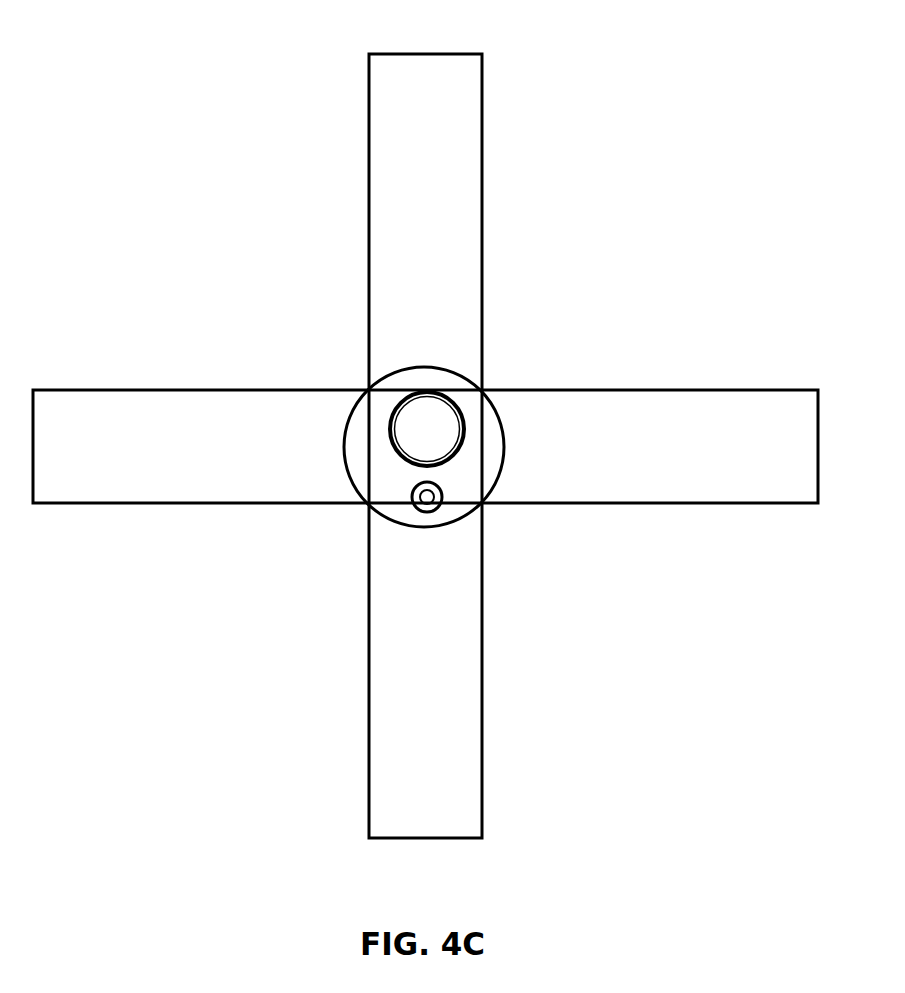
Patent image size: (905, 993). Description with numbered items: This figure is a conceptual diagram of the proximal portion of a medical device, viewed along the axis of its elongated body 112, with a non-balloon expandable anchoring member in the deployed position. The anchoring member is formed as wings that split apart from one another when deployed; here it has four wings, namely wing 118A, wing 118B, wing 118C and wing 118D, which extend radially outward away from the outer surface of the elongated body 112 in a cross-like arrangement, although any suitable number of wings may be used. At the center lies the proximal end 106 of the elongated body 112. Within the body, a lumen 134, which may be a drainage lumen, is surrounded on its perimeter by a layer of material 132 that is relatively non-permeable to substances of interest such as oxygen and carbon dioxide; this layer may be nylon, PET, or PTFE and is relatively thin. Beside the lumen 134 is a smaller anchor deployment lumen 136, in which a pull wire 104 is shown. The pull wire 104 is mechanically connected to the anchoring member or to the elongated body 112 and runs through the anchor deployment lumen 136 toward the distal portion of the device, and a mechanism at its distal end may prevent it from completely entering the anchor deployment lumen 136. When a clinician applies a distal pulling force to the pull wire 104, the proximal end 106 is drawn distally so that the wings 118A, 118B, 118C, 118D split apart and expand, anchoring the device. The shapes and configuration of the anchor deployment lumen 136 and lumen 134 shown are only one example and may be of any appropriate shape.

The wing 118A is at (455, 53).
The wing 118B is at (483, 673).
The wing 118C is at (117, 393).
The wing 118D is at (774, 392).
The elongated body 112 is at (467, 375).
The pull wire 104 is at (368, 452).
The proximal end 106 is at (373, 495).
The layer of material 132 is at (402, 402).
The lumen 134 is at (448, 442).
The anchor deployment lumen 136 is at (430, 512).